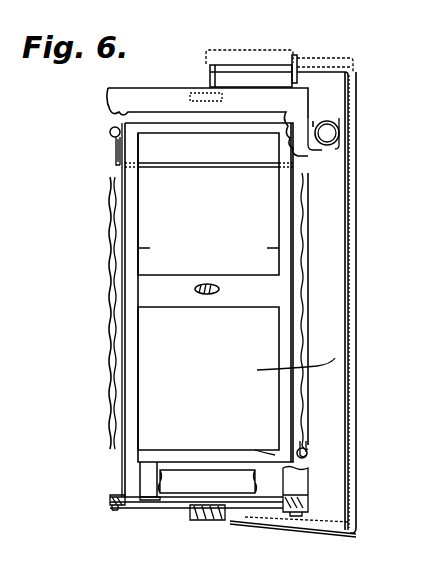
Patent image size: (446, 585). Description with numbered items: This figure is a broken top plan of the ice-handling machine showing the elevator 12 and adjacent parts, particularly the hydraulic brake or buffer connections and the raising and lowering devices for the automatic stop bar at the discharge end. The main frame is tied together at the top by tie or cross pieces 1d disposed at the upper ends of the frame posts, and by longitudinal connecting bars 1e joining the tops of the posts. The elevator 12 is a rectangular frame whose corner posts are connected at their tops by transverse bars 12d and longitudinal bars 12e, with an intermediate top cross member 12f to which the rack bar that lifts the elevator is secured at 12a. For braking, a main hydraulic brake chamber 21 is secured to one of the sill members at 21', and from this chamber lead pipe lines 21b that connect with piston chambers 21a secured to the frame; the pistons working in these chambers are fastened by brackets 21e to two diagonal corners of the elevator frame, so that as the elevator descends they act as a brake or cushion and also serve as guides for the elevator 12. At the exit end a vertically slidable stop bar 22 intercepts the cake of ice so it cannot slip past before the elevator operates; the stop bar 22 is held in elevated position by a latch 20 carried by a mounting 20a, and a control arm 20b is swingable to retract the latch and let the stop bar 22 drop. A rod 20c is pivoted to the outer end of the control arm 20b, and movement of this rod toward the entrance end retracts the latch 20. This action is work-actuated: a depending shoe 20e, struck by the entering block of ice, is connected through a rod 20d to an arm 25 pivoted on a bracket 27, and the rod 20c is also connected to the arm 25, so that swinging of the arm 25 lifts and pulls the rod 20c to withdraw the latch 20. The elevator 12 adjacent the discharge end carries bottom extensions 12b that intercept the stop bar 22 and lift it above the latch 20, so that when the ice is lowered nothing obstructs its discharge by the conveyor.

The tie or cross piece 1d is at (108, 106).
The longitudinal connecting bar 1e is at (328, 290).
The elevator 12 is at (145, 365).
The rack bar securement 12a is at (201, 285).
The bottom extension 12b is at (265, 450).
The transverse bar 12d is at (173, 450).
The longitudinal bar 12e is at (208, 246).
The intermediate top cross member 12f is at (228, 307).
The latch 20 is at (207, 502).
The mounting 20a is at (217, 520).
The control arm 20b is at (310, 532).
The rod 20c is at (356, 484).
The shoe 20e is at (196, 94).
The rod 20d is at (250, 65).
The main hydraulic brake chamber 21 is at (344, 136).
The brake chamber securement 21' is at (327, 110).
The piston chamber 21a is at (364, 430).
The pipe line 21b is at (257, 372).
The bracket 21e is at (360, 398).
The stop bar 22 is at (108, 500).
The arm 25 is at (307, 60).
The bracket 27 is at (295, 55).